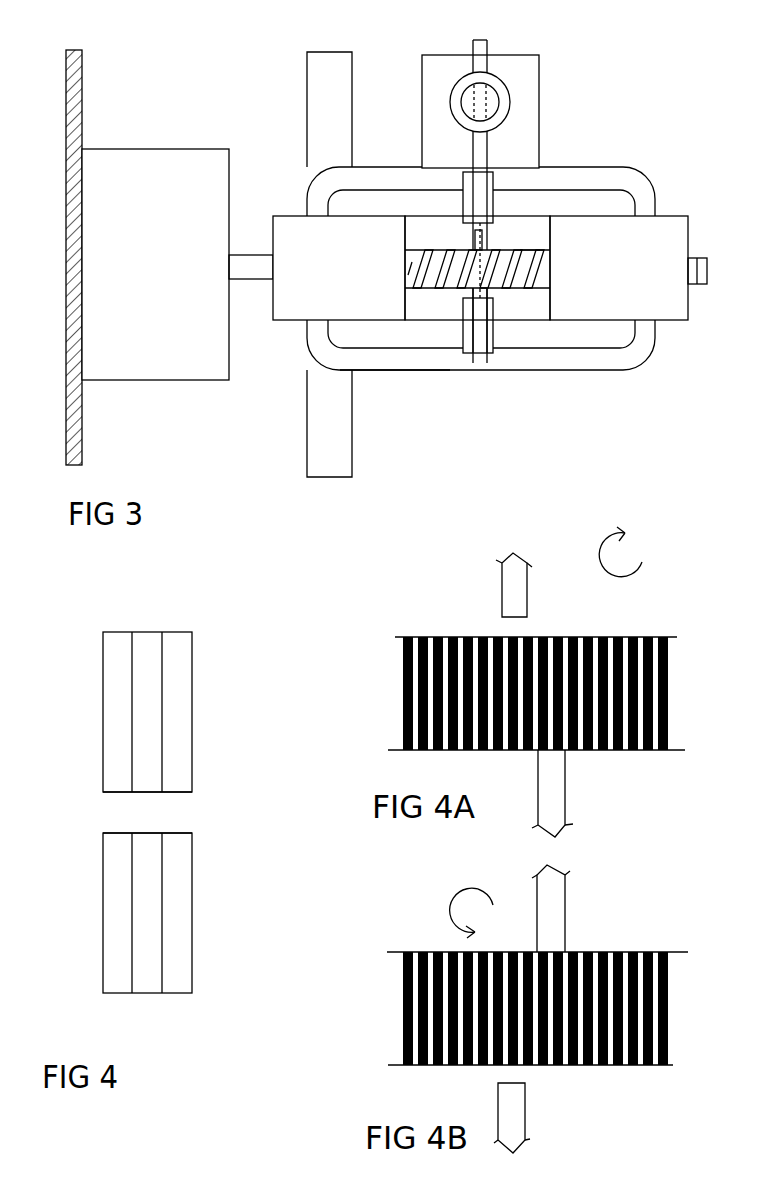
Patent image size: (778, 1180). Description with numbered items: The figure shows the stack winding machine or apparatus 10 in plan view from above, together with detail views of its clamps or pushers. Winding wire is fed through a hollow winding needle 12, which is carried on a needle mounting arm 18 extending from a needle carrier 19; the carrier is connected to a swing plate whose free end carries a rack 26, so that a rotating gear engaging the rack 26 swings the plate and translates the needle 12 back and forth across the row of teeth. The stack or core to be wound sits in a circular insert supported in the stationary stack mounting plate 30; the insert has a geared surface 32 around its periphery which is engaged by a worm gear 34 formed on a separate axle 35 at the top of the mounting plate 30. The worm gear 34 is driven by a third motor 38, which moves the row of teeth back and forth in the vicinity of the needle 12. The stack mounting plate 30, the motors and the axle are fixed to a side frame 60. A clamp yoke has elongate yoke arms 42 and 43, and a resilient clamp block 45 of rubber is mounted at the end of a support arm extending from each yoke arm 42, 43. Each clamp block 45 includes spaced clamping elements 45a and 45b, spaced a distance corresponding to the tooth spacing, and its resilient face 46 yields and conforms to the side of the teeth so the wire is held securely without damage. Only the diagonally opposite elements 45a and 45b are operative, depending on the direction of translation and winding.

In FIG. 3, the stack winding machine 10 is at (648, 46).
In FIG. 3, the winding needle 12 is at (482, 241).
In FIG. 3, the needle mounting arm 18 is at (510, 102).
In FIG. 3, the needle carrier 19 is at (522, 58).
In FIG. 3, the rack 26 is at (307, 92).
In FIG. 3, the stack mounting plate 30 is at (334, 281).
In FIG. 3, the geared surface 32 is at (540, 250).
In FIG. 3, the worm gear 34 is at (521, 250).
In FIG. 3, the separate axle 35 is at (243, 254).
In FIG. 3, the third motor 38 is at (158, 198).
In FIG. 3, the yoke arm 42 is at (377, 372).
In FIG. 3, the yoke arm 43 is at (375, 176).
In FIG. 3, the clamp block 45 is at (493, 185).
In FIG. 4, the clamp block 45 is at (147, 632).
In FIG. 3, the clamping element 45a is at (463, 309).
In FIG. 4, the clamping element 45a is at (108, 725).
In FIG. 4A, the clamping element 45a is at (527, 608).
In FIG. 4B, the clamping element 45a is at (525, 1111).
In FIG. 3, the clamping element 45b is at (493, 337).
In FIG. 4, the clamping element 45b is at (186, 765).
In FIG. 4A, the clamping element 45b is at (565, 787).
In FIG. 4B, the clamping element 45b is at (565, 920).
In FIG. 3, the resilient face 46 is at (481, 295).
In FIG. 4, the resilient face 46 is at (122, 792).
In FIG. 3, the side frame 60 is at (82, 80).